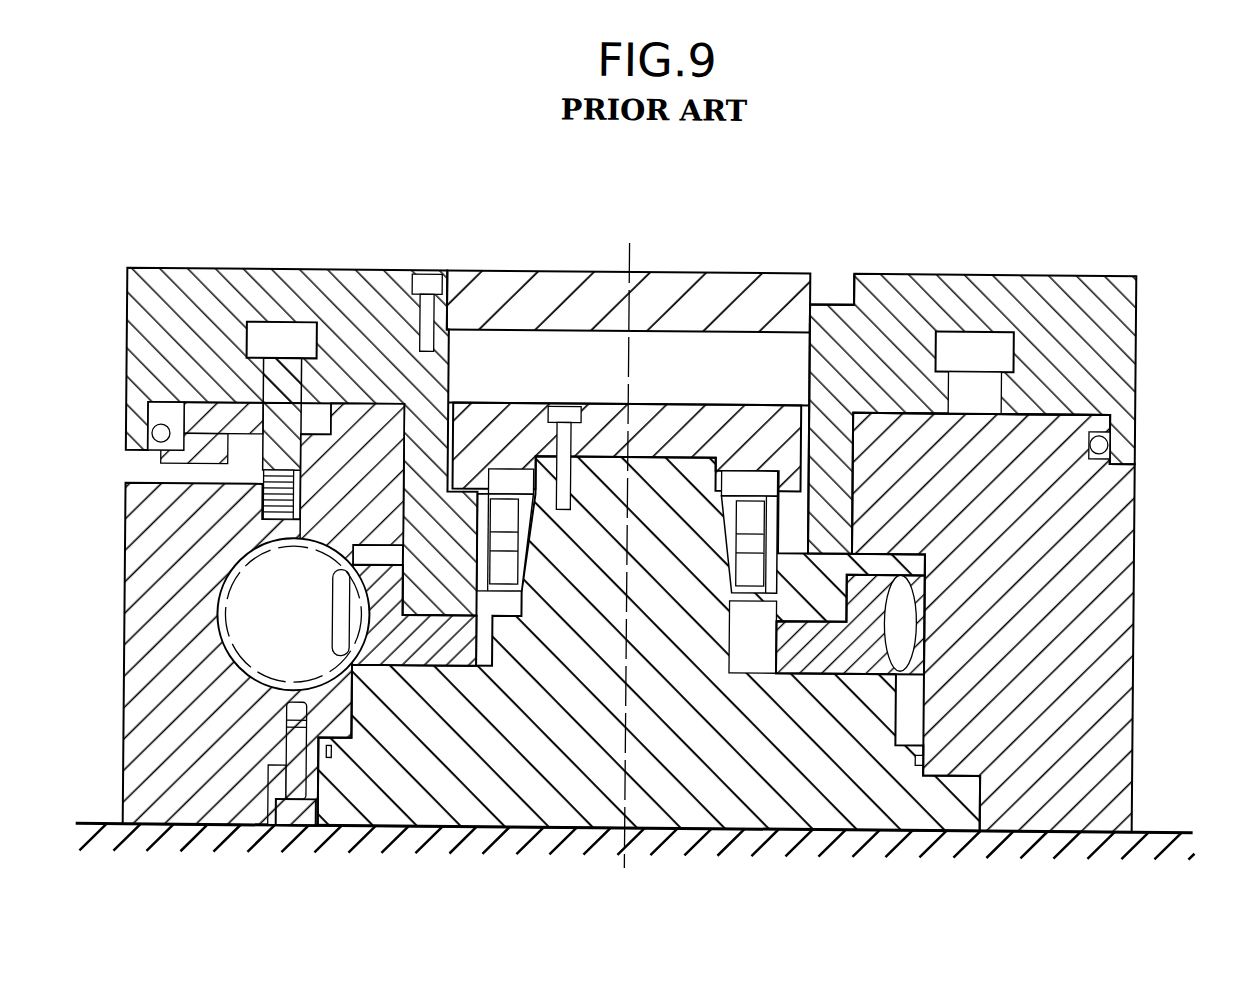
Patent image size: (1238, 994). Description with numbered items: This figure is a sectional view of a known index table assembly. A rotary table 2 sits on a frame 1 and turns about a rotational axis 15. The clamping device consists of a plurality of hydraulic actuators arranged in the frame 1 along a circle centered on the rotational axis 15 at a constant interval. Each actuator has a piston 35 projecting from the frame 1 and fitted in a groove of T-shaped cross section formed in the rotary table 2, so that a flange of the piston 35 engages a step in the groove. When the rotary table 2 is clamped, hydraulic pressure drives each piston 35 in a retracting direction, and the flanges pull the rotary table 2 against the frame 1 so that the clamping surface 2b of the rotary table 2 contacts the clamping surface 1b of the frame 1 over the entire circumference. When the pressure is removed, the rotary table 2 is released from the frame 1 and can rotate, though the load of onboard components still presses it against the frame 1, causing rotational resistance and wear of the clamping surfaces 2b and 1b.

The frame 1 is at (1034, 550).
The clamping surface of the frame 1b is at (1052, 403).
The rotary table 2 is at (174, 311).
The clamping surface of the rotary table 2b is at (1028, 415).
The rotational axis 15 is at (630, 254).
The piston 35 is at (279, 353).